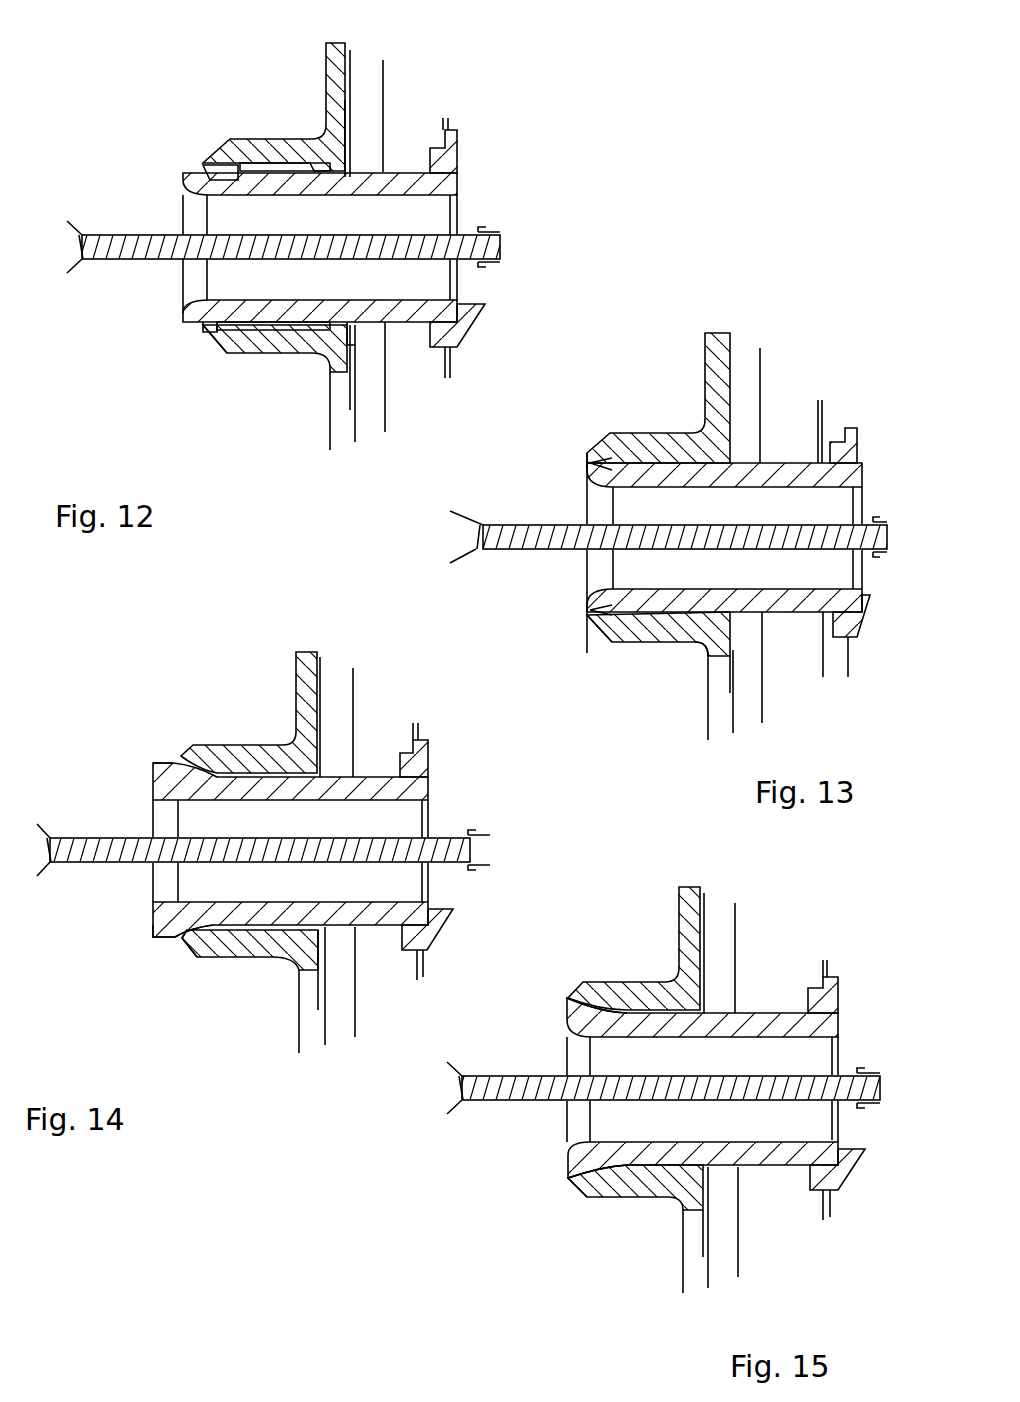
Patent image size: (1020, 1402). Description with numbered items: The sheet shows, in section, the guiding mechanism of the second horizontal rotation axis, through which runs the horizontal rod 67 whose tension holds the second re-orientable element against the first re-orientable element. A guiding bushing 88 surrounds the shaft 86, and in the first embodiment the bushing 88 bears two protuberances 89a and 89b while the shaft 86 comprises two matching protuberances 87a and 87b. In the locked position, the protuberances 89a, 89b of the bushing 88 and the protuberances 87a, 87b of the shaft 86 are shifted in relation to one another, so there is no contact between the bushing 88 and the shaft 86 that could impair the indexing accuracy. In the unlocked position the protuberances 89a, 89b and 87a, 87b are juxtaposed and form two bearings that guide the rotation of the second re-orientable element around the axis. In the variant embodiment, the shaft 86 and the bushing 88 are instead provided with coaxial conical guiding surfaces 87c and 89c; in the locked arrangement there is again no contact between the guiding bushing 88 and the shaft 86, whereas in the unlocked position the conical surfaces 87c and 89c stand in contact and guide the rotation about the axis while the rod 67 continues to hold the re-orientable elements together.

In FIG. 12, the horizontal rod 67 is at (123, 242).
In FIG. 13, the horizontal rod 67 is at (555, 537).
In FIG. 14, the horizontal rod 67 is at (97, 848).
In FIG. 12, the shaft 86 is at (448, 158).
In FIG. 13, the shaft 86 is at (845, 455).
In FIG. 14, the shaft 86 is at (418, 770).
In FIG. 15, the shaft 86 is at (770, 1155).
In FIG. 12, the guiding bushing 88 is at (342, 88).
In FIG. 13, the guiding bushing 88 is at (717, 377).
In FIG. 14, the guiding bushing 88 is at (270, 760).
In FIG. 15, the guiding bushing 88 is at (650, 993).
In FIG. 12, the protuberance 87a is at (307, 325).
In FIG. 13, the protuberance 87a is at (757, 577).
In FIG. 12, the protuberance 87b is at (188, 322).
In FIG. 13, the protuberance 87b is at (577, 575).
In FIG. 14, the conical guiding surface 87c is at (163, 935).
In FIG. 15, the conical guiding surface 87c is at (580, 1177).
In FIG. 12, the protuberance 89a is at (342, 325).
In FIG. 13, the protuberance 89a is at (713, 620).
In FIG. 12, the protuberance 89b is at (220, 330).
In FIG. 13, the protuberance 89b is at (597, 620).
In FIG. 14, the conical guiding surface 89c is at (193, 952).
In FIG. 15, the conical guiding surface 89c is at (583, 1192).